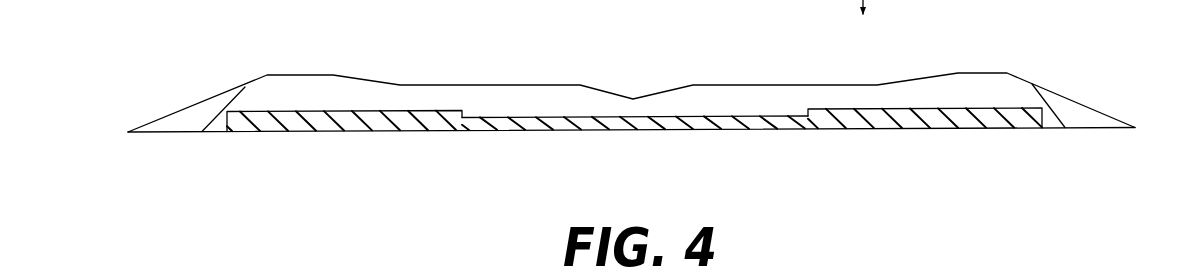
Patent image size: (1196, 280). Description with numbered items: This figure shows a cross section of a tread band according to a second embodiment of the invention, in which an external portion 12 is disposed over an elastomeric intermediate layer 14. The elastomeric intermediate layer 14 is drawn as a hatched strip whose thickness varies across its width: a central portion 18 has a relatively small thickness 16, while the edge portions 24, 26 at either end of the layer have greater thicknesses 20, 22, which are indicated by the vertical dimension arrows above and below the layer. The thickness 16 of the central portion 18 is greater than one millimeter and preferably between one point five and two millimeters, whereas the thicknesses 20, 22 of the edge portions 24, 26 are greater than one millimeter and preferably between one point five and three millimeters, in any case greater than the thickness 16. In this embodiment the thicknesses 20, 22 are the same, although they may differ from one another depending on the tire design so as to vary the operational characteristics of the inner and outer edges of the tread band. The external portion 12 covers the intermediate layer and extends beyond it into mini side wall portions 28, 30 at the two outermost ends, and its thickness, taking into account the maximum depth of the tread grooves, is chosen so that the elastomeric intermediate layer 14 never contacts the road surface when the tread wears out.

The external portion 12 is at (708, 95).
The elastomeric intermediate layer 14 is at (1000, 108).
The thickness of central portion 16 is at (601, 67).
The central portion 18 is at (670, 128).
The thickness of edge portion 20 is at (300, 63).
The thickness of edge portion 22 is at (959, 60).
The edge portion 24 is at (393, 112).
The edge portion 26 is at (888, 127).
The mini side wall portion 28 is at (188, 118).
The mini side wall portion 30 is at (1077, 112).